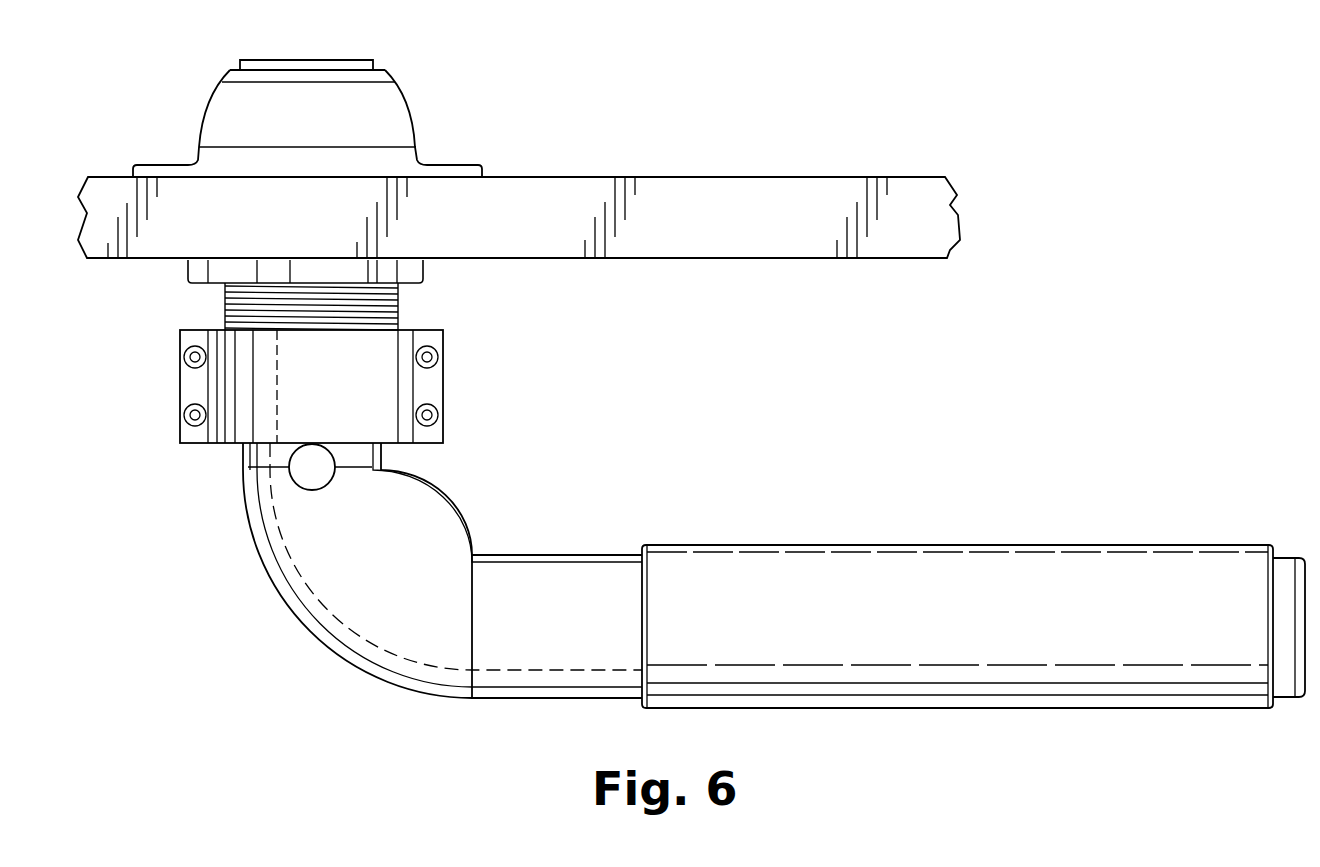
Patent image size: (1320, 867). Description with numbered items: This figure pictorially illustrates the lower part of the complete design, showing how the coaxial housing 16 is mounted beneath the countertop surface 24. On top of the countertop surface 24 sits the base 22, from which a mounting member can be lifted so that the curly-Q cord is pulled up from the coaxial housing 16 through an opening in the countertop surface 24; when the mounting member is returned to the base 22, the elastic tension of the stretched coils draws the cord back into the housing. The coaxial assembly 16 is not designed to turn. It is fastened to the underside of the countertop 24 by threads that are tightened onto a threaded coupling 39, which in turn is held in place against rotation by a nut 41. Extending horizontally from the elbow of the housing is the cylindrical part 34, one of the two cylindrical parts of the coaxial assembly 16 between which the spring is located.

The coaxial housing 16 is at (935, 507).
The base 22 is at (421, 108).
The countertop surface 24 is at (788, 210).
The cylindrical part 34 is at (1148, 593).
The threaded coupling 39 is at (398, 308).
The nut 41 is at (197, 276).